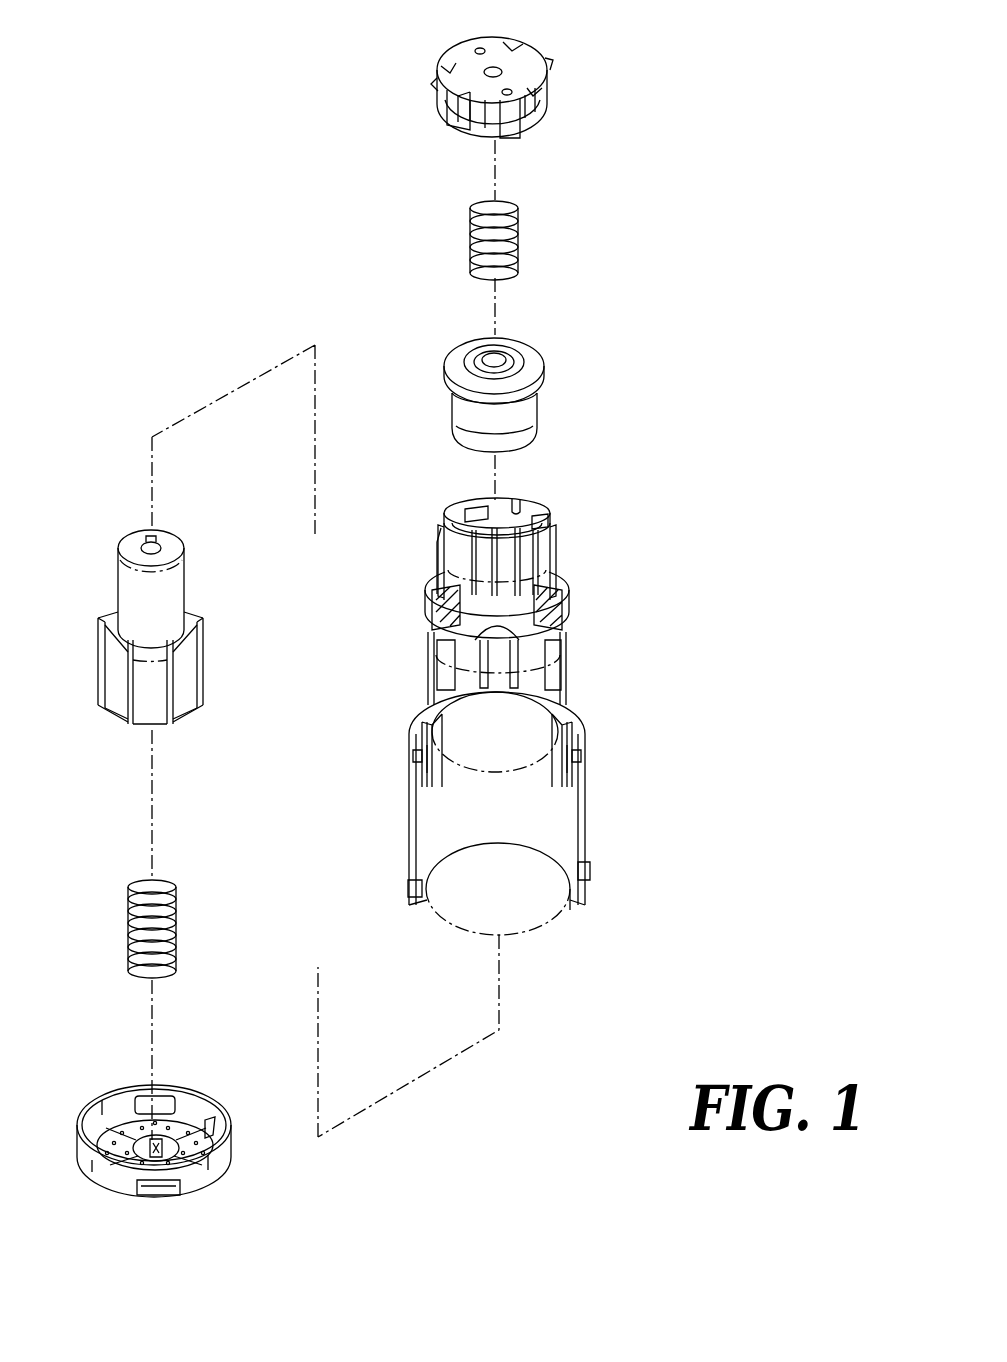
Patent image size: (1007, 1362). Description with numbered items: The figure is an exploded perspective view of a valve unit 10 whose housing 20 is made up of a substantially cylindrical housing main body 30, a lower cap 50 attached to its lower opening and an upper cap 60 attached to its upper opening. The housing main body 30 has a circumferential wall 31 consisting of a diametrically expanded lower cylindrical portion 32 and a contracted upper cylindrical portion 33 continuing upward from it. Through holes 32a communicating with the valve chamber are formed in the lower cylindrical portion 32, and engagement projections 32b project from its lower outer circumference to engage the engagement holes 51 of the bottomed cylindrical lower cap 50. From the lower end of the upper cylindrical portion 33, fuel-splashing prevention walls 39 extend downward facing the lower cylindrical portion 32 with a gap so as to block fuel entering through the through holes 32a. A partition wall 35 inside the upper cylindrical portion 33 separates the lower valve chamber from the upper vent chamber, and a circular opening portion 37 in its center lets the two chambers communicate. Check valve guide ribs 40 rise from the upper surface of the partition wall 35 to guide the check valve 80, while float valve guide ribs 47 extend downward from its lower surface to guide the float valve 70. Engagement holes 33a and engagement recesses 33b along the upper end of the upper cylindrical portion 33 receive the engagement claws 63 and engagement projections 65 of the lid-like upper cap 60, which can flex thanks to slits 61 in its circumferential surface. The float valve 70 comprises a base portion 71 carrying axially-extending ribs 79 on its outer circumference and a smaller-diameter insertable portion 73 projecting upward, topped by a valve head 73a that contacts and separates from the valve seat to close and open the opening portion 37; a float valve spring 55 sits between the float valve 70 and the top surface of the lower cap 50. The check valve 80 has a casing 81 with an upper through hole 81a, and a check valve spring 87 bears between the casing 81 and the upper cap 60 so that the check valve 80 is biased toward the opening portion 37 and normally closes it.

The valve unit 10 is at (417, 491).
The housing 20 is at (692, 293).
The housing main body 30 is at (572, 648).
The circumferential wall 31 is at (333, 660).
The lower cylindrical portion 32 is at (410, 800).
The through holes 32a is at (415, 757).
The engagement projections 32b is at (410, 888).
The upper cylindrical portion 33 is at (428, 675).
The engagement holes 33a is at (472, 510).
The engagement recesses 33b is at (525, 506).
The partition wall 35 is at (455, 592).
The opening portion 37 is at (560, 600).
The fuel-splashing prevention walls 39 is at (572, 778).
The check valve guide ribs 40 is at (560, 580).
The float valve guide ribs 47 is at (555, 668).
The lower cap 50 is at (246, 1163).
The engagement holes 51 is at (162, 1098).
The float valve spring 55 is at (178, 920).
The upper cap 60 is at (555, 121).
The slits 61 is at (513, 50).
The engagement claws 63 is at (468, 118).
The engagement projections 65 is at (548, 62).
The float valve 70 is at (120, 529).
The base portion 71 is at (188, 708).
The insertable portion 73 is at (178, 578).
The valve head 73a is at (152, 543).
The ribs 79 is at (203, 682).
The check valve 80 is at (453, 338).
The casing 81 is at (530, 411).
The through hole 81a is at (497, 358).
The check valve spring 87 is at (470, 236).